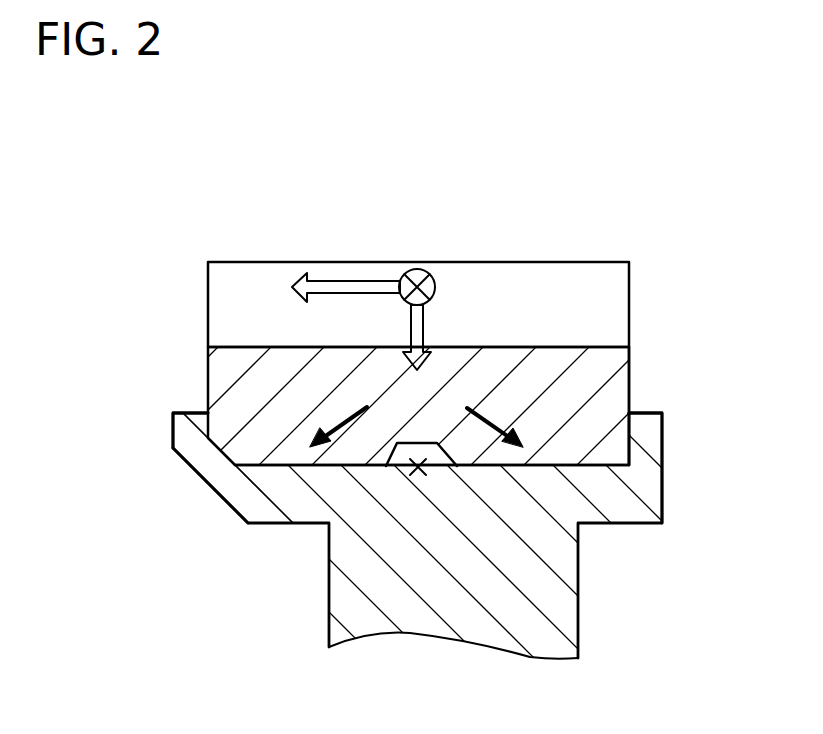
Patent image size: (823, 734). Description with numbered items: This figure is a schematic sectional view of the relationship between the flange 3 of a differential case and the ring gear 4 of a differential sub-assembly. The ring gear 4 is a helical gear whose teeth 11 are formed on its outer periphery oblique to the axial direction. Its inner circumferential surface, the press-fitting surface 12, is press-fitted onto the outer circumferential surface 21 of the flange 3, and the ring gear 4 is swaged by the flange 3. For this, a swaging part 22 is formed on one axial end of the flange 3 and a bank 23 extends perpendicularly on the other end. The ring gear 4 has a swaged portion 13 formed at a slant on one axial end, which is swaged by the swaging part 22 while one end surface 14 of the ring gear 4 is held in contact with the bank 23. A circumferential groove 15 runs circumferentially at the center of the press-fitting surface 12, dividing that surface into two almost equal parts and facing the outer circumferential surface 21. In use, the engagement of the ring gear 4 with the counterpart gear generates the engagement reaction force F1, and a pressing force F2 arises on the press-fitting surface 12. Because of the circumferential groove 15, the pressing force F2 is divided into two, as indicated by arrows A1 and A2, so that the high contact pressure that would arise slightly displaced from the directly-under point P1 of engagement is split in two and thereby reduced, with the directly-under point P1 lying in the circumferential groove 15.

The teeth 11 is at (541, 282).
The engagement reaction force F1 is at (350, 283).
The pressing force F2 is at (422, 329).
The ring gear 4 is at (630, 372).
The one end surface 14 is at (630, 398).
The arrow A1 is at (337, 422).
The arrow A2 is at (478, 416).
The flange 3 is at (578, 623).
The swaging part 22 is at (187, 435).
The bank 23 is at (647, 442).
The swaged portion 13 is at (230, 453).
The press-fitting surface 12 is at (303, 467).
The circumferential groove 15 is at (399, 447).
The directly-under point of engagement P1 is at (418, 478).
The outer circumferential surface 21 is at (567, 462).